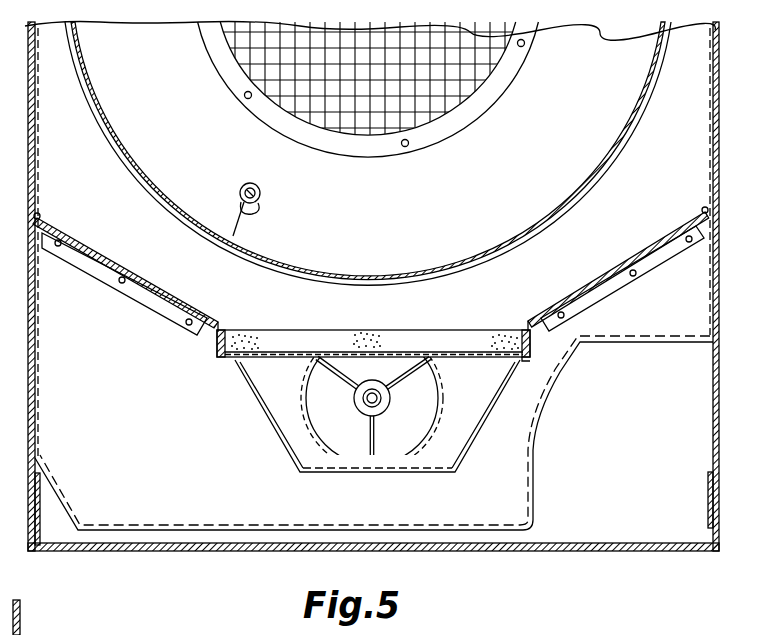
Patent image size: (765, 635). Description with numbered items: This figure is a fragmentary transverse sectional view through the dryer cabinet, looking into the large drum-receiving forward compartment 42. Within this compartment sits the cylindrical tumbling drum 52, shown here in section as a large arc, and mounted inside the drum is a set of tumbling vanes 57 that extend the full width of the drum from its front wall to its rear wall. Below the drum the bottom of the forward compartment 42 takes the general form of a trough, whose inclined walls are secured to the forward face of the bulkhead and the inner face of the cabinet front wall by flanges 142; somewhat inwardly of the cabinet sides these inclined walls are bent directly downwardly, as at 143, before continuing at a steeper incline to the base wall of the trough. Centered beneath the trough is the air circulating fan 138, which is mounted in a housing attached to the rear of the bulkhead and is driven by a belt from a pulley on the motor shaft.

The forward compartment 42 is at (670, 192).
The tumbling drum 52 is at (188, 226).
The tumbling vanes 57 is at (261, 209).
The air circulating fan 138 is at (333, 379).
The flanges 142 is at (528, 353).
The downwardly bent portion 143 is at (472, 331).